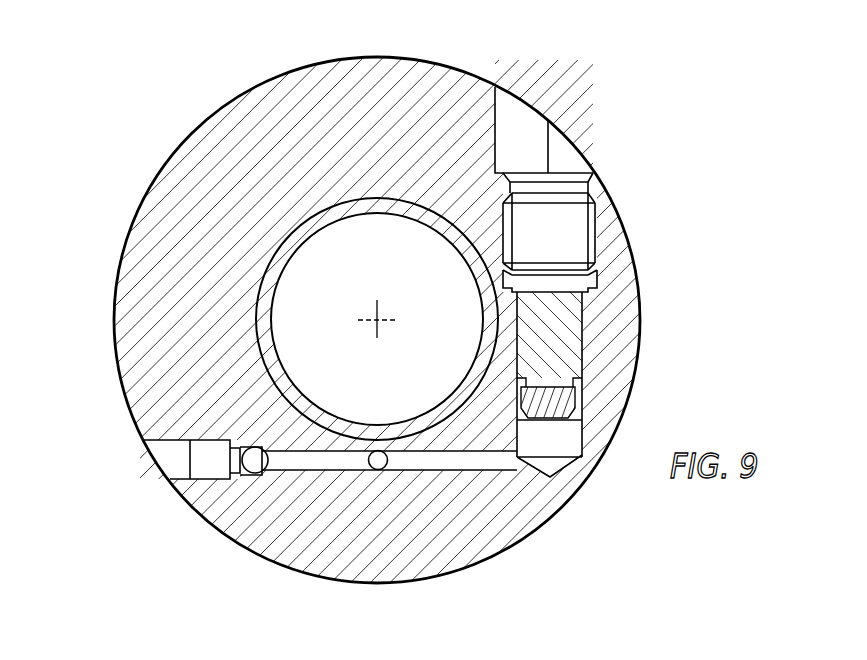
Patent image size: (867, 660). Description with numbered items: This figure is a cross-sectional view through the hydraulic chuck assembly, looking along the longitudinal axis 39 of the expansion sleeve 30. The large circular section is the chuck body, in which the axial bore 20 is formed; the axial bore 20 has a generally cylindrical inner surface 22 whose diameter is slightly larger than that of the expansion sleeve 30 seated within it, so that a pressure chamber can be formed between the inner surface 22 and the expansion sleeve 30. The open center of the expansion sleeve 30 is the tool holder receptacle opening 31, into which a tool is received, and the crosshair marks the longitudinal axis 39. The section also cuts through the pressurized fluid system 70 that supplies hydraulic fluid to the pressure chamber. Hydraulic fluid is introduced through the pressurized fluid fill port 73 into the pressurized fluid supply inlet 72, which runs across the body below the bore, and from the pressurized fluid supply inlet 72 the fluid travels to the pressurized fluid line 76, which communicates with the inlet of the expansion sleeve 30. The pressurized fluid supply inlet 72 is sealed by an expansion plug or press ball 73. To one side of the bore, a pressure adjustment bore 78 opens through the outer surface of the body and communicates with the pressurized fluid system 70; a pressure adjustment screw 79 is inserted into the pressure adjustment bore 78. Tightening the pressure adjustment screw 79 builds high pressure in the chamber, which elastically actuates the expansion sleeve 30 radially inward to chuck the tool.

The axial bore 20 is at (293, 222).
The inner surface 22 is at (290, 290).
The expansion sleeve 30 is at (303, 252).
The tool holder receptacle opening 31 is at (315, 350).
The longitudinal axis 39 is at (382, 318).
The pressure adjustment bore 78 is at (496, 128).
The pressure adjustment screw 79 is at (562, 238).
The pressurized fluid system 70 is at (457, 473).
The pressurized fluid supply inlet 72 is at (497, 460).
The pressurized fluid fill port 73 is at (208, 470).
The pressurized fluid line 76 is at (380, 472).